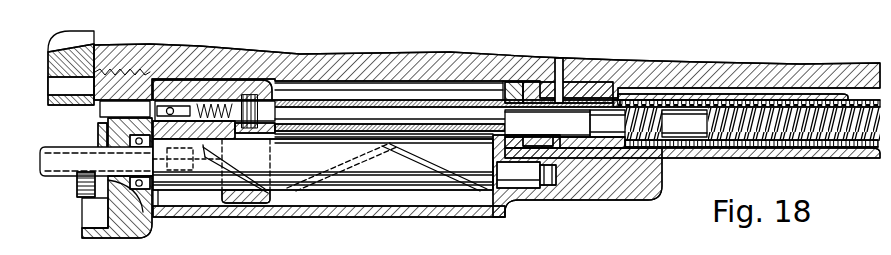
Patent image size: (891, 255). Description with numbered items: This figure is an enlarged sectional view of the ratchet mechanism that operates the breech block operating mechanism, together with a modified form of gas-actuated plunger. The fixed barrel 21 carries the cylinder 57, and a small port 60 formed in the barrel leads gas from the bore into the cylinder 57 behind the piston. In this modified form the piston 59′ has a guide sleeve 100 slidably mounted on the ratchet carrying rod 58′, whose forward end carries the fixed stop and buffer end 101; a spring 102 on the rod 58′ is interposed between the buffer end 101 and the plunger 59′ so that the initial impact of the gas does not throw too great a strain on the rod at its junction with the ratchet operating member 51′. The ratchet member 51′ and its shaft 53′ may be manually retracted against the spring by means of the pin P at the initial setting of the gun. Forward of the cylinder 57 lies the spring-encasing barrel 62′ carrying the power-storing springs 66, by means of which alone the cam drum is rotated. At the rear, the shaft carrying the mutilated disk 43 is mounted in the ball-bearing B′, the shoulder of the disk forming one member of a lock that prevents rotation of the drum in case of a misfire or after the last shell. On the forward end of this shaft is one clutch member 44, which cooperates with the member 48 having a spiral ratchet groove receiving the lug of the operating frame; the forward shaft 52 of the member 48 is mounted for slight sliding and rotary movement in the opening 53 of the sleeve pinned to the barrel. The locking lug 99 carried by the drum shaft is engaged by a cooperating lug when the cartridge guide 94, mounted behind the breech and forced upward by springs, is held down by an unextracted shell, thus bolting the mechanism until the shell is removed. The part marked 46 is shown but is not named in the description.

The guide 94 is at (48, 62).
The fixed barrel 21 is at (427, 60).
The guide sleeve 100 is at (320, 100).
The bar 53′ is at (115, 108).
The pin P is at (171, 107).
The port 60 is at (557, 66).
The piston 59′ is at (605, 112).
The ratchet carrying rod 58′ is at (627, 116).
The spring 102 is at (661, 112).
The stop and buffer end 101 is at (688, 120).
The spring-encasing barrel 62′ is at (878, 150).
The spring 66 is at (853, 158).
The cylinder 57 is at (690, 159).
The mutilated disk 43 is at (100, 121).
The ball-bearing B′ is at (128, 205).
The locking lug 99 is at (80, 196).
The clutch member 48 is at (370, 168).
The ratchet operating member 51′ is at (250, 204).
The bottom wall 46 is at (196, 195).
The clutch member 44 is at (172, 190).
The forward shaft 52 is at (528, 180).
The opening 53 is at (548, 186).